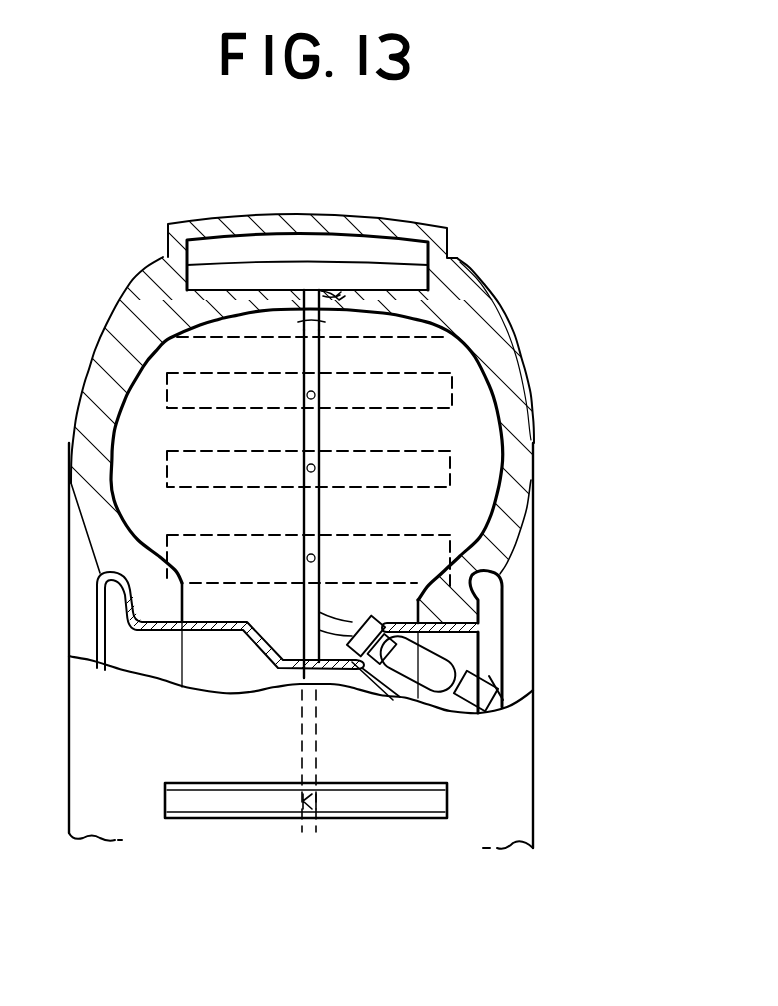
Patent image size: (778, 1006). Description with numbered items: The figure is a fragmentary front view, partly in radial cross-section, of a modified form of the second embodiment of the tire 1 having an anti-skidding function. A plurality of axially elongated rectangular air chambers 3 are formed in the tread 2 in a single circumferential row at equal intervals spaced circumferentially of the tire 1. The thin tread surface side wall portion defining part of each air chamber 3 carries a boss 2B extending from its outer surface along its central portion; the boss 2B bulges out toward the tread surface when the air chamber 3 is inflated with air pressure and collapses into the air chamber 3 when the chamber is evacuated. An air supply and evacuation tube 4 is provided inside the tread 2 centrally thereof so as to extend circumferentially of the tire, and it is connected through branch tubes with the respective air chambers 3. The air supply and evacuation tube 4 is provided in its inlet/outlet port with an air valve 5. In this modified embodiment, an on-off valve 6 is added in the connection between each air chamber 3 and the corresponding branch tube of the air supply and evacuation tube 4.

The tire 1 is at (535, 767).
The tread 2 is at (165, 290).
The boss 2B is at (362, 226).
The air chamber 3 is at (418, 283).
The air supply and evacuation tube 4 is at (313, 431).
The air valve 5 is at (427, 652).
The on-off valve 6 is at (307, 292).